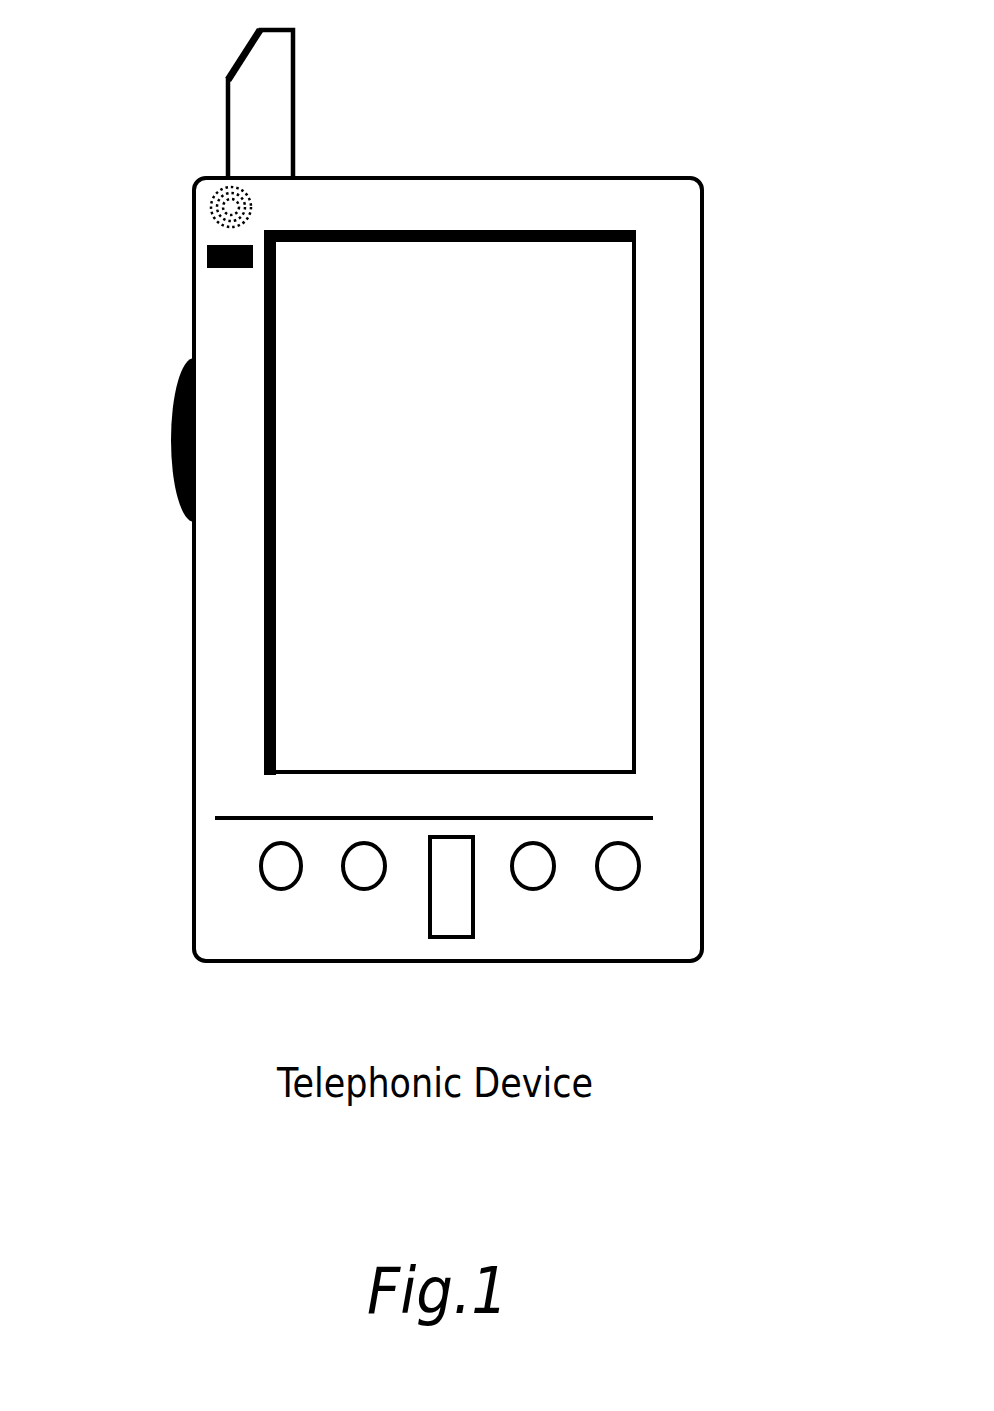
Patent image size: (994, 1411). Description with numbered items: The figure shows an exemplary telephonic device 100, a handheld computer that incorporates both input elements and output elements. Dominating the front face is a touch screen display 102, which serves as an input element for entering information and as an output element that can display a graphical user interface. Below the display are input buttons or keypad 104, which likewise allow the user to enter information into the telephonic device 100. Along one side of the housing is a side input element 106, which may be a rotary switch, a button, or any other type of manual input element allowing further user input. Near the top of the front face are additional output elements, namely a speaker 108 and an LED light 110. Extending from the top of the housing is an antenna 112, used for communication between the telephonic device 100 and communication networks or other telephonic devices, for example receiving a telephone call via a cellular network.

The telephonic device 100 is at (702, 200).
The touch screen display 102 is at (300, 697).
The input buttons or keypad 104 is at (622, 878).
The side input element 106 is at (172, 412).
The speaker 108 is at (210, 207).
The LED light 110 is at (208, 257).
The antenna 112 is at (293, 88).